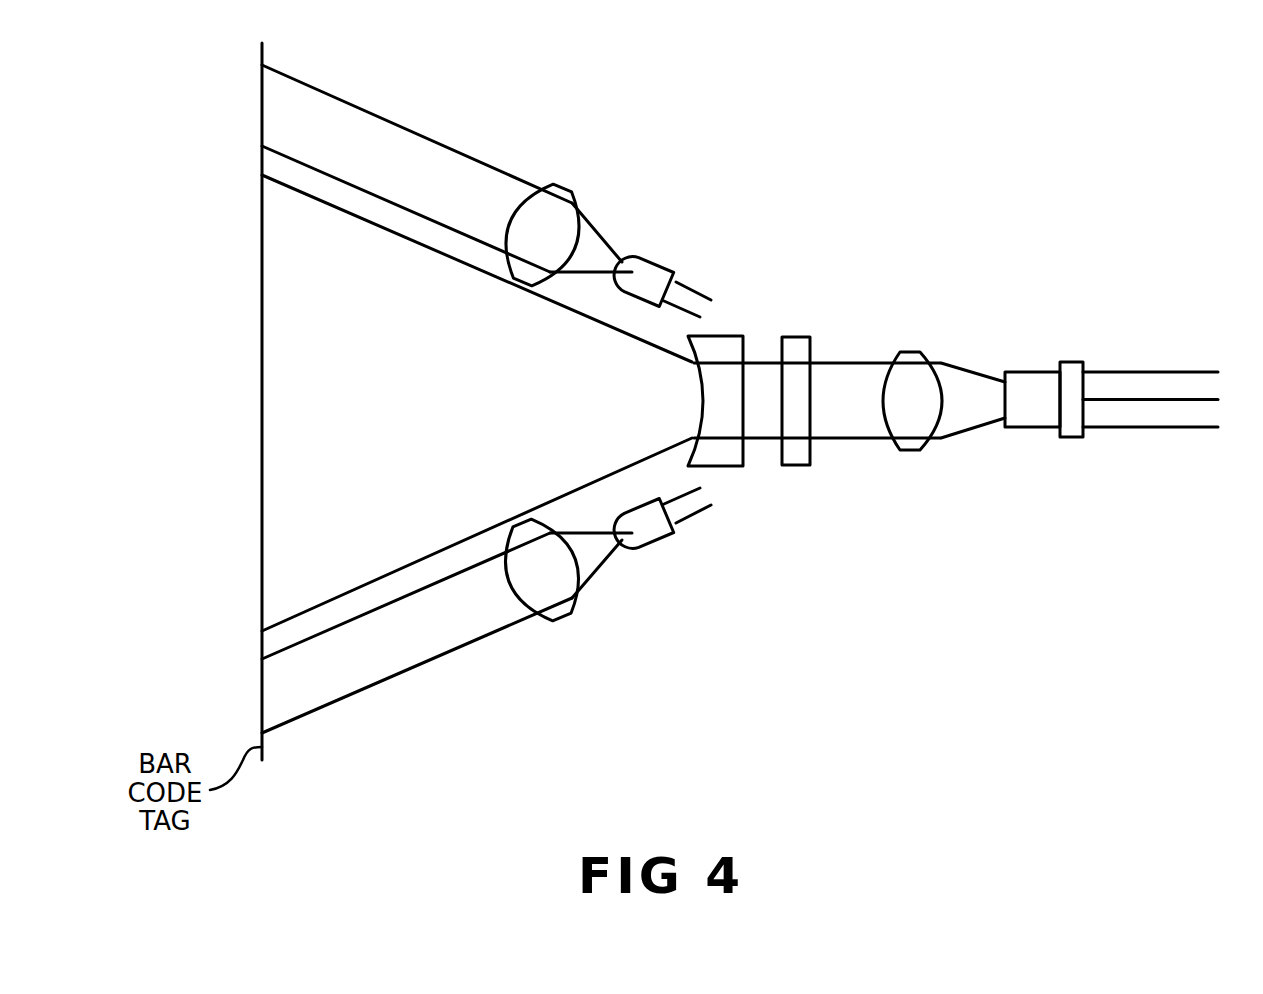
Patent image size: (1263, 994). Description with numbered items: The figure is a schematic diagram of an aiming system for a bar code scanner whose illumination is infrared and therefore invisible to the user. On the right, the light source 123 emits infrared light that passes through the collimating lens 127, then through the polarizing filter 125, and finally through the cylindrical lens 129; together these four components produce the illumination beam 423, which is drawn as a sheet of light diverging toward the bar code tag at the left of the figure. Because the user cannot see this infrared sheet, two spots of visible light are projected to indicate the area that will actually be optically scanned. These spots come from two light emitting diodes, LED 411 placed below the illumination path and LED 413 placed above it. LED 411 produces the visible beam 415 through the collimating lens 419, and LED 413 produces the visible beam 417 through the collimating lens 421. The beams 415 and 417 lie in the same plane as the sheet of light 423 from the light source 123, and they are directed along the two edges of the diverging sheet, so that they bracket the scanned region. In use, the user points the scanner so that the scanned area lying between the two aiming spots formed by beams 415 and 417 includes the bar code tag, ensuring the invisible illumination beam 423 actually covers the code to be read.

The light source 123 is at (1042, 428).
The polarizing filter 125 is at (795, 335).
The collimating lens 127 is at (918, 348).
The cylindrical lens 129 is at (743, 467).
The light emitting diode 411 is at (653, 543).
The light emitting diode 413 is at (668, 266).
The beam of visible light 415 is at (368, 662).
The beam of visible light 417 is at (432, 170).
The collimating lens 419 is at (555, 620).
The collimating lens 421 is at (563, 190).
The illumination beam 423 is at (305, 393).